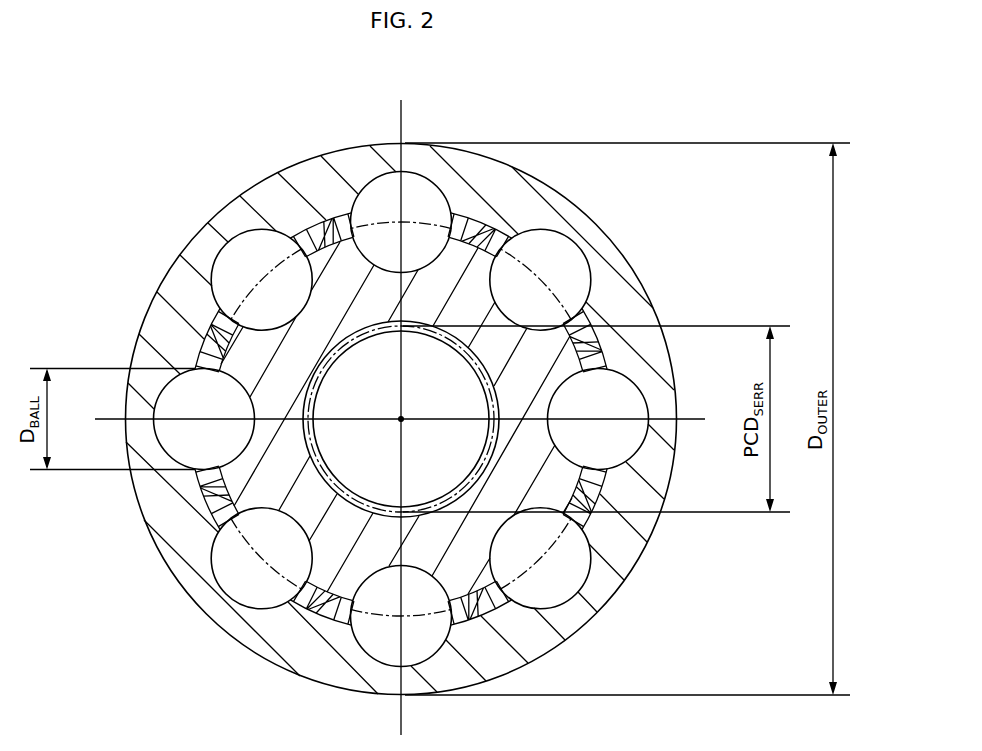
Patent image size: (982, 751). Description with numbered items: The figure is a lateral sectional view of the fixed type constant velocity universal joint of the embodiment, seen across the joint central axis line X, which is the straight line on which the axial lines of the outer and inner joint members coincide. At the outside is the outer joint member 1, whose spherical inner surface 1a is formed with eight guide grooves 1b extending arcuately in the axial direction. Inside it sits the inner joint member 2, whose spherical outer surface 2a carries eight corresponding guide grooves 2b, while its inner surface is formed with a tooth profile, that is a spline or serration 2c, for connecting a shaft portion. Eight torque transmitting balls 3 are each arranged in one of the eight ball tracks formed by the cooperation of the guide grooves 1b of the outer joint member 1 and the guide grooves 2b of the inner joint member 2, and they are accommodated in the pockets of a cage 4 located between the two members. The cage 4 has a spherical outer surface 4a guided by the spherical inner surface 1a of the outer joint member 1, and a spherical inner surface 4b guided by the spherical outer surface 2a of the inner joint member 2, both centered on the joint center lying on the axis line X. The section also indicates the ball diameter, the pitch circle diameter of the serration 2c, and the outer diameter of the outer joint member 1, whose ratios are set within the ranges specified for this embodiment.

The outer joint member 1 is at (284, 160).
The spherical inner surface 1a is at (294, 236).
The guide grooves 1b is at (214, 276).
The inner joint member 2 is at (429, 406).
The spherical outer surface 2a is at (505, 248).
The guide grooves 2b is at (560, 293).
The tooth profile (spline or serration) 2c is at (401, 419).
The torque transmitting balls 3 is at (369, 177).
The cage 4 is at (345, 419).
The spherical outer surface 4a is at (208, 493).
The spherical inner surface 4b is at (234, 522).
The joint central axis line X is at (404, 421).